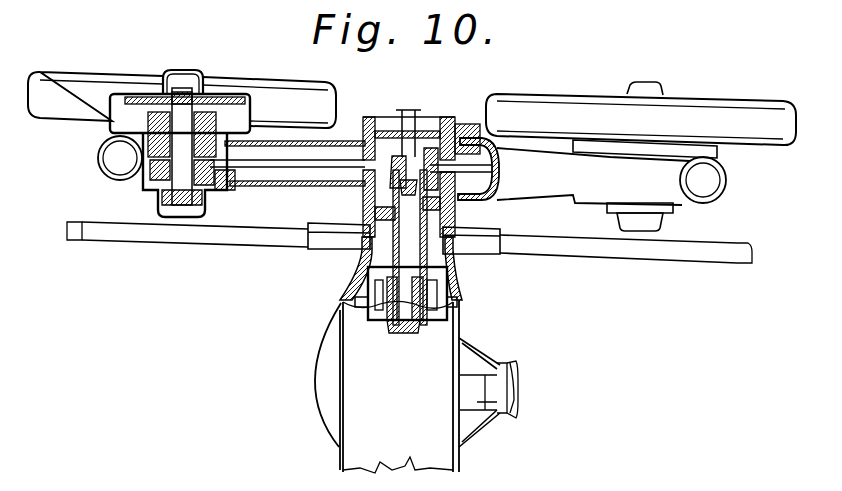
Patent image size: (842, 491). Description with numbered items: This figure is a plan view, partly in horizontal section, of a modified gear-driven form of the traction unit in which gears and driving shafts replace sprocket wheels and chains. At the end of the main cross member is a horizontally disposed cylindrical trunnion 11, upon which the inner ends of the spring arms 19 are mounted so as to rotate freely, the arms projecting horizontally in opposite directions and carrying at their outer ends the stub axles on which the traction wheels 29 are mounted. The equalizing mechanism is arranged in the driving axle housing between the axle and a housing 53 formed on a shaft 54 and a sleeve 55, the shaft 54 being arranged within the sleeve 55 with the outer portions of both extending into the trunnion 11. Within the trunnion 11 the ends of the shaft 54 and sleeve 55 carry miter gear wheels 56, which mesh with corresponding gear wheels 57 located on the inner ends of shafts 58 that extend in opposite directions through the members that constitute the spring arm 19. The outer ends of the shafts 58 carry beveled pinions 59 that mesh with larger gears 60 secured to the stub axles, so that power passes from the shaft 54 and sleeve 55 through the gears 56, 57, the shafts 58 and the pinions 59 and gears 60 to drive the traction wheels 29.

The trunnion 11 is at (415, 160).
The spring arm 19 is at (611, 189).
The traction wheel 29 is at (412, 115).
The housing 53 is at (443, 288).
The shaft 54 is at (407, 243).
The sleeve 55 is at (425, 265).
The miter gear wheel 56 is at (363, 193).
The gear wheel 57 is at (397, 157).
The shaft 58 is at (290, 160).
The beveled pinion 59 is at (215, 182).
The larger gear 60 is at (143, 147).